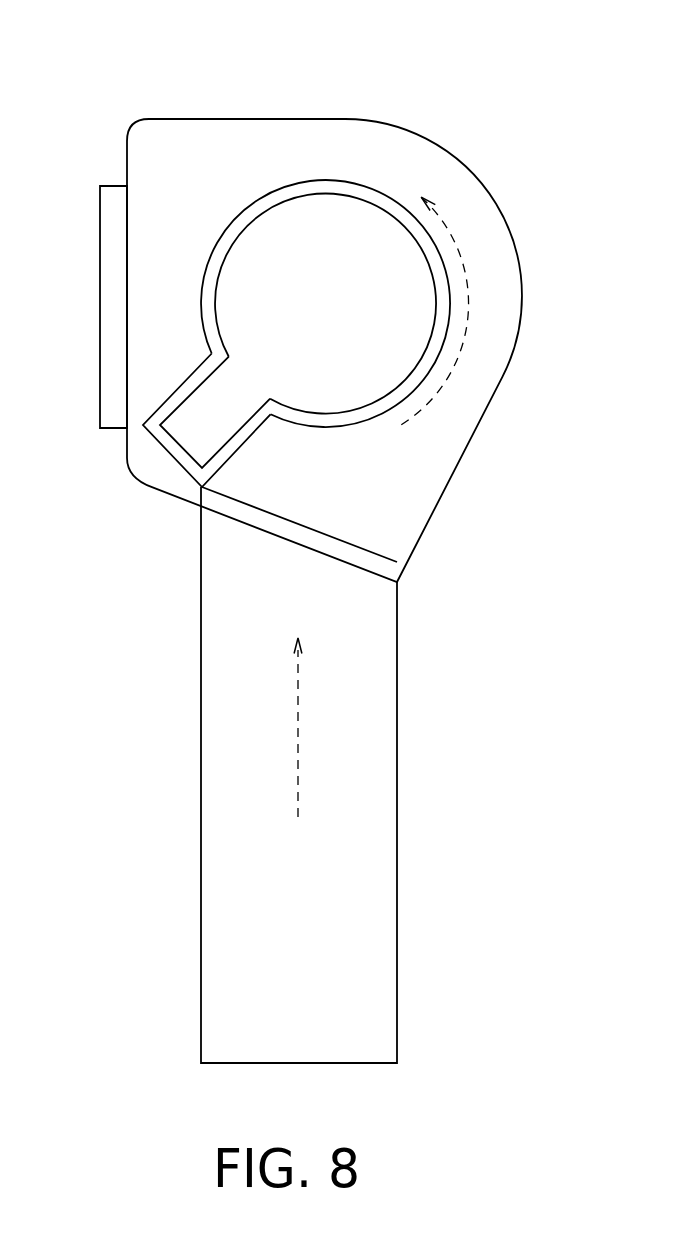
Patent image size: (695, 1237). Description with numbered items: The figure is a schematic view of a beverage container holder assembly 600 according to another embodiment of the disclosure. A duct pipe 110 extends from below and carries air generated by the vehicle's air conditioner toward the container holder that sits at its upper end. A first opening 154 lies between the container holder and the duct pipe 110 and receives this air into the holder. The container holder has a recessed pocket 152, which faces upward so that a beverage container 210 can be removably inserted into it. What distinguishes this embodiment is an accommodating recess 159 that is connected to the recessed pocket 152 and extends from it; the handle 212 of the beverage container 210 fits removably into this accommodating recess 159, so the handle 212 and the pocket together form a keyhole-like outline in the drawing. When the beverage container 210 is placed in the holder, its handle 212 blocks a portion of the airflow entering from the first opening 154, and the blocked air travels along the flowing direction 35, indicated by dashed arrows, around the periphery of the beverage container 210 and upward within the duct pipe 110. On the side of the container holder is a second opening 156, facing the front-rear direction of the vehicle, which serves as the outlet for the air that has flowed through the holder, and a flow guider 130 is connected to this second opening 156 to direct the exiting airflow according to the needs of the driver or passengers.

The beverage container holder assembly 600 is at (315, 590).
The second opening 156 is at (127, 233).
The flow guider 130 is at (117, 352).
The recessed pocket 152 is at (317, 192).
The beverage container 210 is at (433, 285).
The handle 212 is at (193, 447).
The accommodating recess 159 is at (194, 398).
The first opening 154 is at (272, 515).
The duct pipe 110 is at (385, 845).
The flowing direction 35 is at (450, 376).